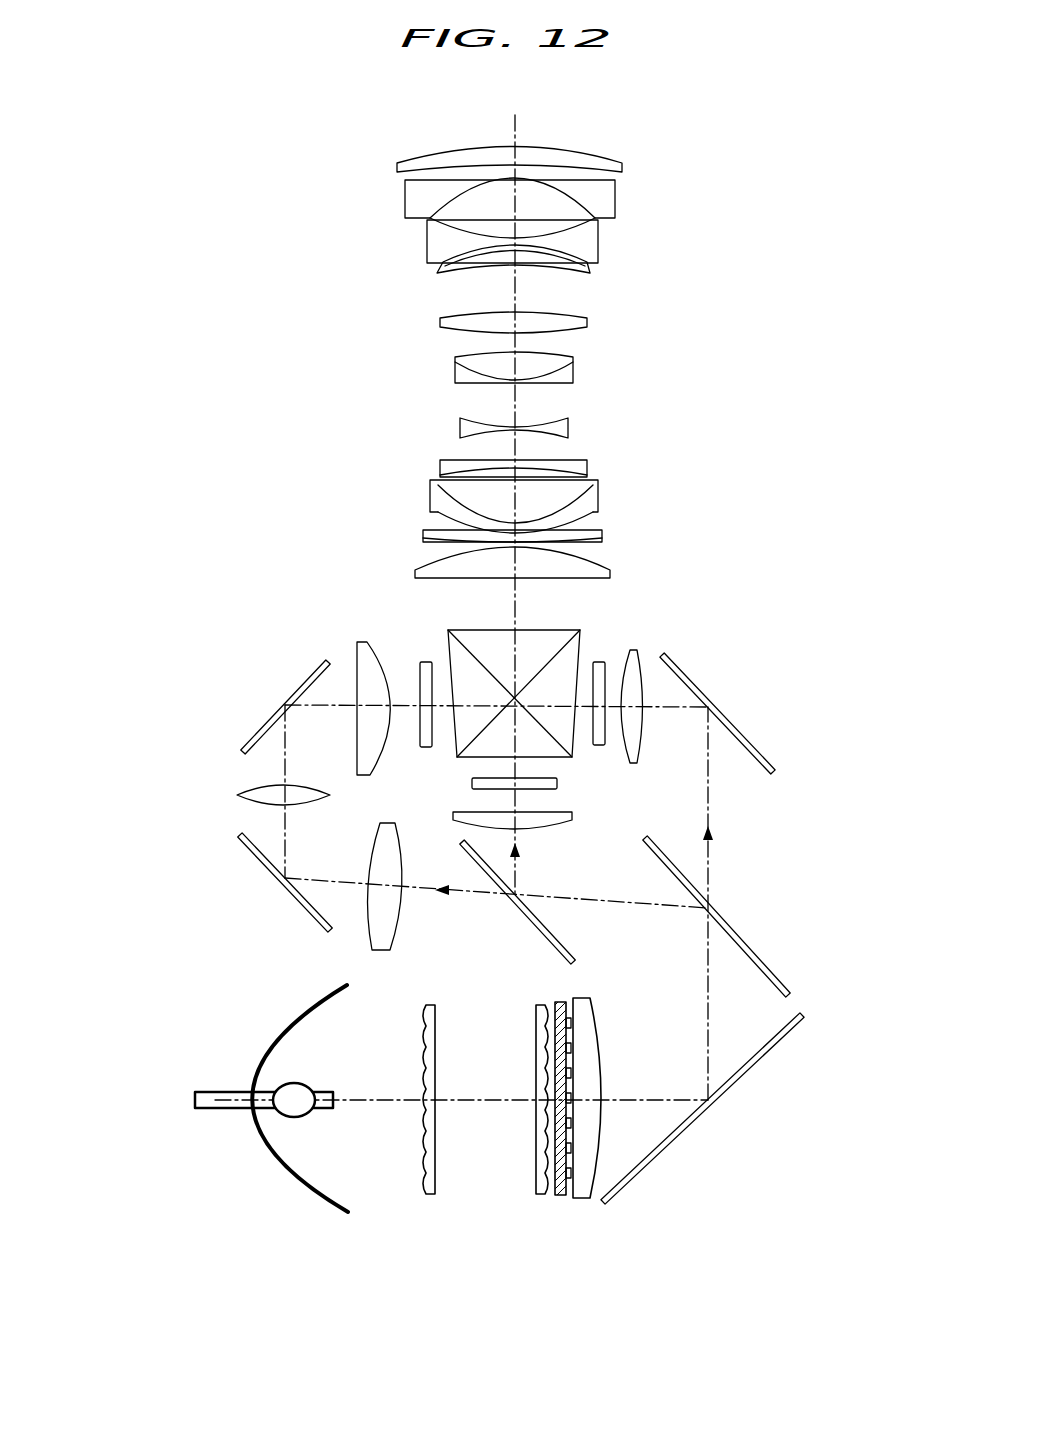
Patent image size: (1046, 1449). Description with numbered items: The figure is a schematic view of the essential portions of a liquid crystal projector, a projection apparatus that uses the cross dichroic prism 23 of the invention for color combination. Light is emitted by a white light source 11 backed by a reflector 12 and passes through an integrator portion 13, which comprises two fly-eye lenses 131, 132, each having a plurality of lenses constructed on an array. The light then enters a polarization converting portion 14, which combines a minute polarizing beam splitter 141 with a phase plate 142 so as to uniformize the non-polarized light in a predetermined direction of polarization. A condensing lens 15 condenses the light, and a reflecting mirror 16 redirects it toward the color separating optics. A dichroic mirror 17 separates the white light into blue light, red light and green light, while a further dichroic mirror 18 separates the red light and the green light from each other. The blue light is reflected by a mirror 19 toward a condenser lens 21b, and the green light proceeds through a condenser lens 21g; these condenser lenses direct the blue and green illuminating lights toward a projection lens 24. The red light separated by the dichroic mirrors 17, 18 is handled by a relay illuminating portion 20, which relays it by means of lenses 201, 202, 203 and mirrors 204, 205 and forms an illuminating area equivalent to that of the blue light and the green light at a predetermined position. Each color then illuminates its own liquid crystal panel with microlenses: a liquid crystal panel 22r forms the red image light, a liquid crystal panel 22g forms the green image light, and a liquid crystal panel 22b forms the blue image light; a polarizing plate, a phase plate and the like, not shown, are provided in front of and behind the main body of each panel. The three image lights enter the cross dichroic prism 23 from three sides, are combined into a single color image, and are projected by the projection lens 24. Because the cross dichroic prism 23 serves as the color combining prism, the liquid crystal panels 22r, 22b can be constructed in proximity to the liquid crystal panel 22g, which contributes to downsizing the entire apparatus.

The white light source 11 is at (283, 1112).
The reflector 12 is at (308, 1188).
The integrator portion 13 is at (455, 1165).
The fly-eye lens 131 is at (423, 1193).
The fly-eye lens 132 is at (536, 1178).
The polarization converting portion 14 is at (583, 1167).
The minute polarizing beam splitter 141 is at (560, 1196).
The phase plate 142 is at (585, 1198).
The condensing lens 15 is at (601, 1043).
The reflecting mirror 16 is at (750, 1066).
The dichroic mirror 17 is at (781, 985).
The dichroic mirror 18 is at (550, 937).
The mirror 19 is at (760, 750).
The relay illuminating portion 20 is at (256, 790).
The lens 201 is at (282, 896).
The lens 202 is at (240, 795).
The lens 203 is at (357, 648).
The mirror 204 is at (258, 855).
The mirror 205 is at (262, 726).
The condenser lens 21b is at (642, 740).
The condenser lens 21g is at (530, 830).
The liquid crystal panel 22b is at (600, 662).
The liquid crystal panel 22g is at (557, 785).
The liquid crystal panel 22r is at (418, 663).
The cross dichroic prism 23 is at (472, 630).
The projection lens 24 is at (650, 582).